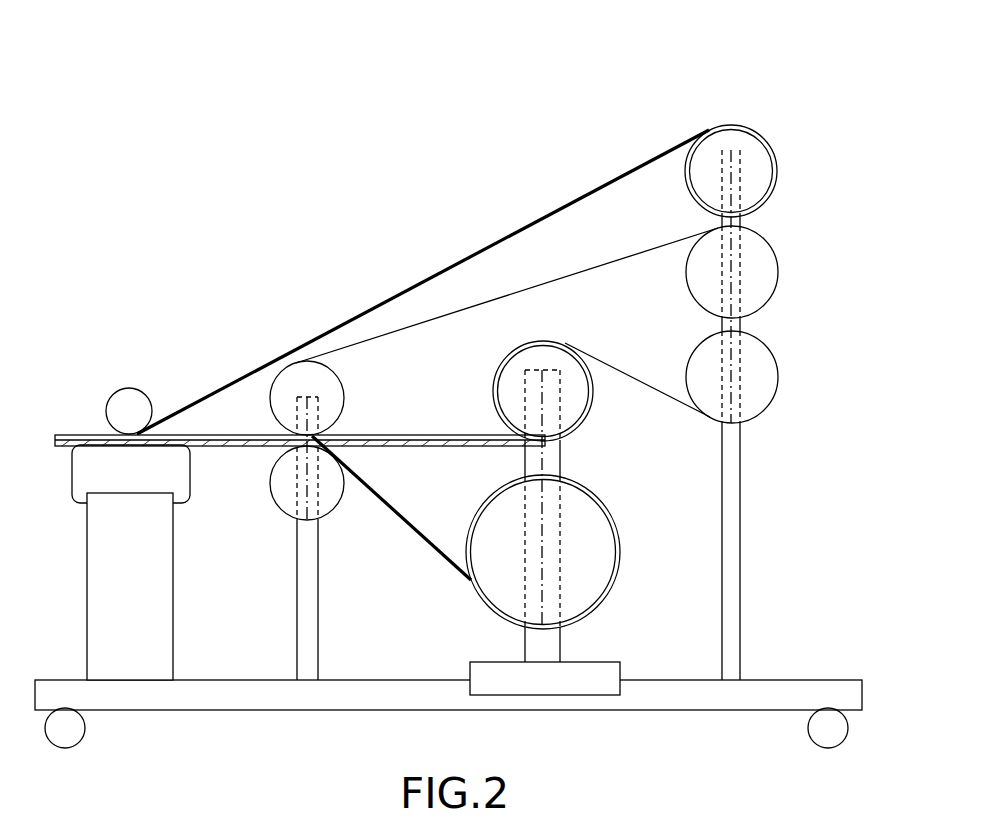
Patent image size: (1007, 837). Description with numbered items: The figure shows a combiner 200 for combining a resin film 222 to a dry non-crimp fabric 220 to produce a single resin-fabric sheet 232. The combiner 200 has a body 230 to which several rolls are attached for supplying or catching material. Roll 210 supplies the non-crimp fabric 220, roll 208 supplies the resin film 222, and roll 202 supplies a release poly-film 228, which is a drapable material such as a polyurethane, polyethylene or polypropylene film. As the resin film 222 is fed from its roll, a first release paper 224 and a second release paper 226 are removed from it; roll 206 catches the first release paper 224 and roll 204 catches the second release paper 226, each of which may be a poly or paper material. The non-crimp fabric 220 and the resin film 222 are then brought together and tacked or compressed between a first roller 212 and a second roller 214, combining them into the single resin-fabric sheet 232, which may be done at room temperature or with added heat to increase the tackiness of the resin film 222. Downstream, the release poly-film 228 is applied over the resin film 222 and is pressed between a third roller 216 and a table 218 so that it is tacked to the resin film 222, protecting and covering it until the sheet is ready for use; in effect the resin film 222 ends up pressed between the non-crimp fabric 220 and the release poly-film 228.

The combiner 200 is at (784, 64).
The roll 202 is at (777, 161).
The roll 204 is at (778, 268).
The roll 206 is at (778, 370).
The roll 208 is at (591, 410).
The roll 210 is at (619, 498).
The first roller 212 is at (345, 392).
The second roller 214 is at (335, 514).
The third roller 216 is at (132, 388).
The table 218 is at (72, 480).
The non-crimp fabric 220 is at (373, 490).
The resin film 222 is at (452, 444).
The first release paper 224 is at (646, 383).
The second release paper 226 is at (617, 260).
The release poly-film 228 is at (300, 347).
The body 230 is at (661, 680).
The resin-fabric sheet 232 is at (235, 458).